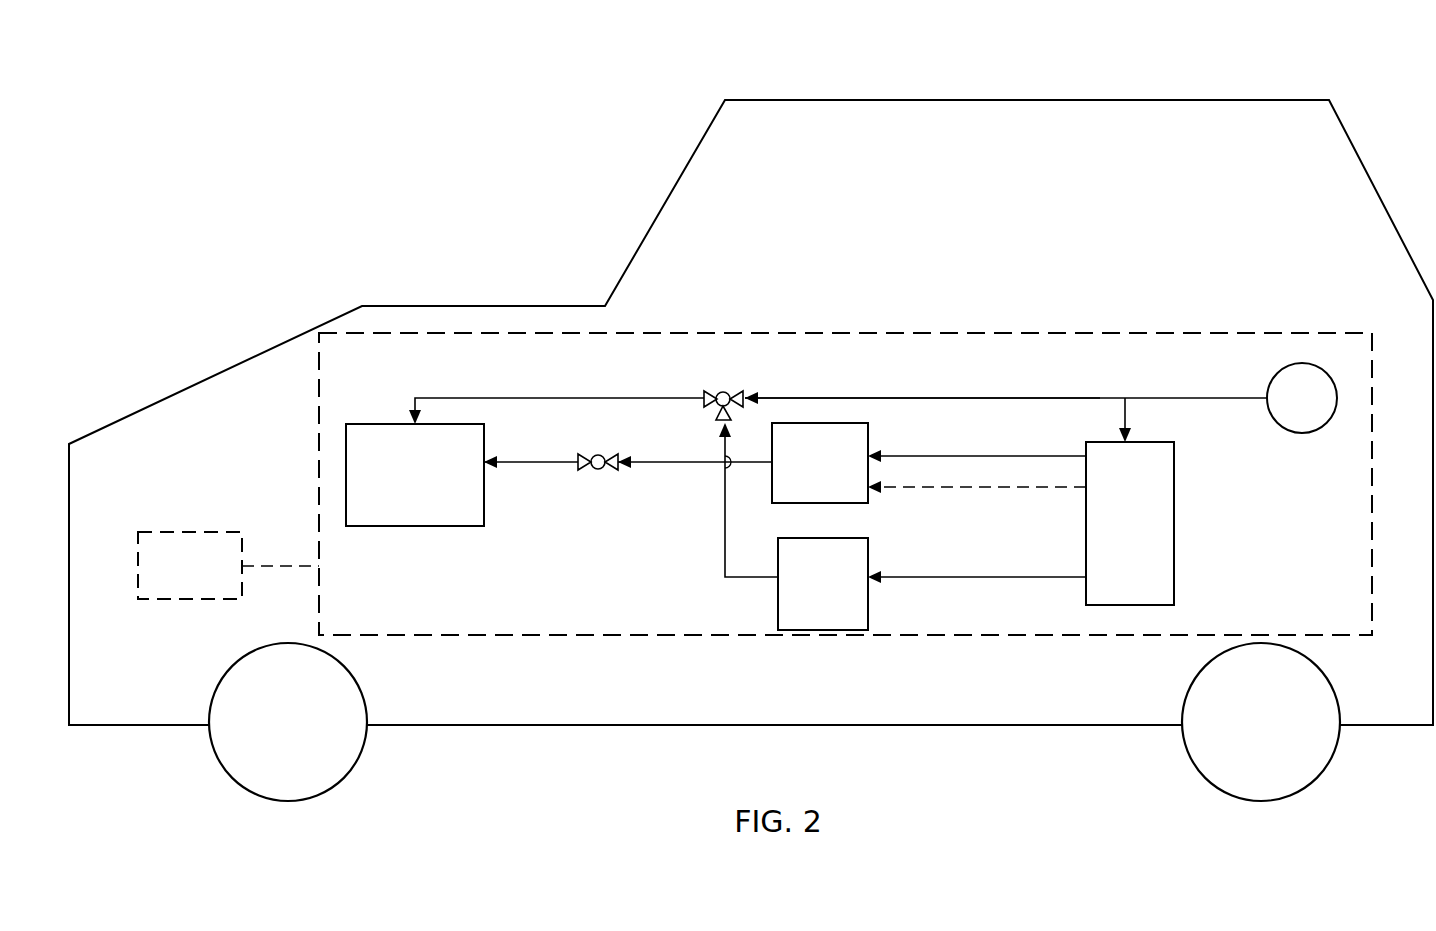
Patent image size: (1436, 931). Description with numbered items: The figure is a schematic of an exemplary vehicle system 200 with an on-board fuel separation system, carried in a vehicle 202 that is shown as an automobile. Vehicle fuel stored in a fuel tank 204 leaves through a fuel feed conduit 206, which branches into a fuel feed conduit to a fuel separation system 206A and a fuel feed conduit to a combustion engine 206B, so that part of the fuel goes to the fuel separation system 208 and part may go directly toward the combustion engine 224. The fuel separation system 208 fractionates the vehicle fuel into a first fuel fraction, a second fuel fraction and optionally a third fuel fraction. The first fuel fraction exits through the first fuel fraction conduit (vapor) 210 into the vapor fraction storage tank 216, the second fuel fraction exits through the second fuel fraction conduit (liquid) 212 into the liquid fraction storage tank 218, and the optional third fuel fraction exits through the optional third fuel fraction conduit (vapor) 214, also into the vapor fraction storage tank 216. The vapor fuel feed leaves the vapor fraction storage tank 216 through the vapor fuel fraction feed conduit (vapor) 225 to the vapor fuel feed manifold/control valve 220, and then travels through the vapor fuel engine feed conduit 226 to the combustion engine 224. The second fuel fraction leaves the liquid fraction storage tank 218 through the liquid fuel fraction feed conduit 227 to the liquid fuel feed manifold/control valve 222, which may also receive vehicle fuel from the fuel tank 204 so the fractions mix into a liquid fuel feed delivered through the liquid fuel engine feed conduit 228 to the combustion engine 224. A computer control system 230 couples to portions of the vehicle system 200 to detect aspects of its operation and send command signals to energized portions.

The vehicle system 200 is at (636, 188).
The vehicle 202 is at (1270, 100).
The fuel tank 204 is at (1317, 432).
The fuel feed conduit 206 is at (1172, 396).
The fuel feed conduit to a fuel separation system 206A is at (1126, 412).
The fuel feed conduit to a combustion engine 206B is at (948, 397).
The fuel separation system 208 is at (1130, 523).
The first fuel fraction conduit (vapor) 210 is at (930, 455).
The second fuel fraction conduit (liquid) 212 is at (980, 578).
The optional third fuel fraction conduit (vapor) 214 is at (960, 488).
The vapor fraction storage tank 216 is at (820, 463).
The liquid fraction storage tank 218 is at (823, 584).
The vapor fuel feed manifold/control valve 220 is at (604, 470).
The liquid fuel feed manifold/control valve 222 is at (728, 392).
The combustion engine 224 is at (415, 475).
The vapor fuel fraction feed conduit (vapor) 225 is at (678, 462).
The vapor fuel engine feed conduit 226 is at (535, 463).
The liquid fuel fraction feed conduit 227 is at (721, 545).
The liquid fuel engine feed conduit 228 is at (485, 397).
The computer control system 230 is at (228, 565).